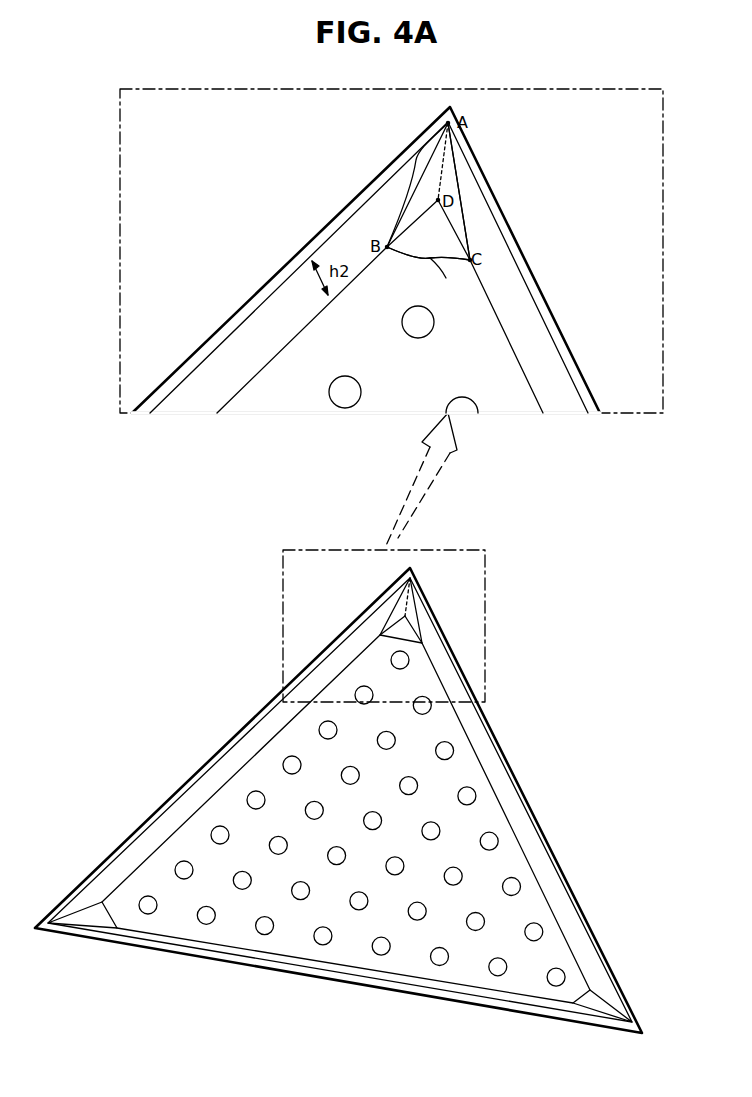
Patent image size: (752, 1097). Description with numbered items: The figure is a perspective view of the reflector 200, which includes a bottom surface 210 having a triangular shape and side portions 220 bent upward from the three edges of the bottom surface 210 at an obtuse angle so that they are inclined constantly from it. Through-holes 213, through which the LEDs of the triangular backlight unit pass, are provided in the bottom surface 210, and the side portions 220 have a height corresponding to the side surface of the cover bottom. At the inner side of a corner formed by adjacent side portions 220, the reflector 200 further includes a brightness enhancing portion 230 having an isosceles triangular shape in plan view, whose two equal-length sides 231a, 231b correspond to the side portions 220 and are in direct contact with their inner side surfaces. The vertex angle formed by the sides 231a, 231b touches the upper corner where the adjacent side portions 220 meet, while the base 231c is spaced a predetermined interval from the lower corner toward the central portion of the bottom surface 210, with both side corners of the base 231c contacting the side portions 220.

The reflector 200 is at (580, 637).
The bottom surface 210 is at (462, 772).
The through-holes 213 is at (280, 765).
The side portions 220 is at (523, 823).
The brightness enhancing portion 230 is at (412, 618).
The side of brightness enhancing portion 231a is at (416, 157).
The side of brightness enhancing portion 231b is at (457, 173).
The base of brightness enhancing portion 231c is at (470, 260).